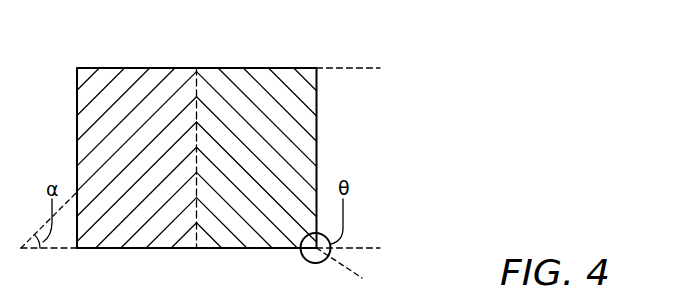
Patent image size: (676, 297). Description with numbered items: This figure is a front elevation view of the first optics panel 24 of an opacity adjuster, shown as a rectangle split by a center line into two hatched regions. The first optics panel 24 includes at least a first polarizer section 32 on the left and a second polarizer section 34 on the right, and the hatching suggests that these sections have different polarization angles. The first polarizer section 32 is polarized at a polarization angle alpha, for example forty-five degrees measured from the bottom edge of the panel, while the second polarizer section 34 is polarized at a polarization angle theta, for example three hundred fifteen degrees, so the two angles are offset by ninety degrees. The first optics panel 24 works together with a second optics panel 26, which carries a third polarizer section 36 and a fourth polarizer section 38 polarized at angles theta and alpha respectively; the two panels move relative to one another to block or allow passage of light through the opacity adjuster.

The first optics panel 24 is at (86, 52).
The second optics panel 26 is at (80, 296).
The first polarizer section 32 is at (139, 77).
The second polarizer section 34 is at (243, 77).
The third polarizer section 36 is at (137, 272).
The fourth polarizer section 38 is at (257, 272).